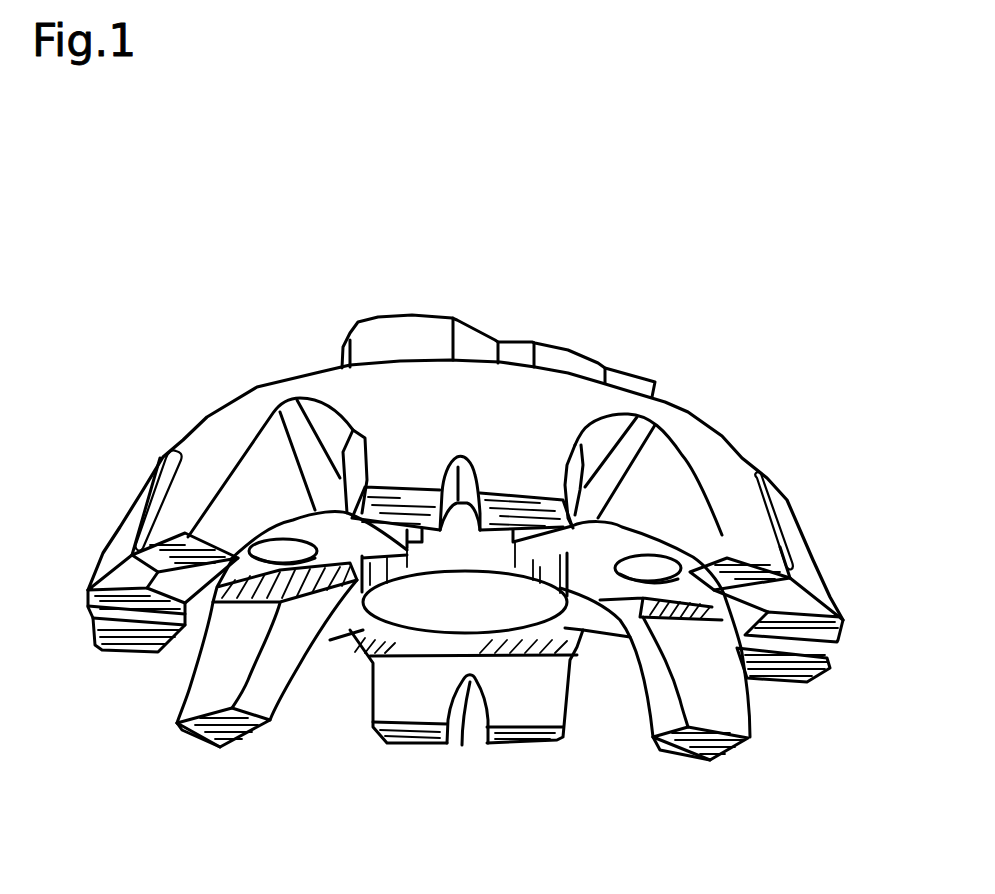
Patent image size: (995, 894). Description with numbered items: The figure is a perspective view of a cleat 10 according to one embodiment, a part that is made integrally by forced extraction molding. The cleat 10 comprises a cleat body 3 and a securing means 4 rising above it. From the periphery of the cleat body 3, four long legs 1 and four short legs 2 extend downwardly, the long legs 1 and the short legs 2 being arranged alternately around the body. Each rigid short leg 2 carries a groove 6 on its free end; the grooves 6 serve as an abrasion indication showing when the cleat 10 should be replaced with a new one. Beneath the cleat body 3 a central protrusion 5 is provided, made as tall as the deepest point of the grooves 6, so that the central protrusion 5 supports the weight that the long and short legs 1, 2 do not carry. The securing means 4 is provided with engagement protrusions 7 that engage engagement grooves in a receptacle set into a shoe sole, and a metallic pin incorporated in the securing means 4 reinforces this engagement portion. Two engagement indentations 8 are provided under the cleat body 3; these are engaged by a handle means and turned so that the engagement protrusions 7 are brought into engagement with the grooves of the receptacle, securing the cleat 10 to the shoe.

The long leg 1 is at (740, 520).
The short leg 2 is at (515, 485).
The cleat body 3 is at (353, 395).
The securing means 4 is at (532, 350).
The central protrusion 5 is at (477, 605).
The groove 6 is at (460, 720).
The engagement protrusion 7 is at (405, 343).
The engagement indentation 8 is at (273, 563).
The cleat 10 is at (705, 390).